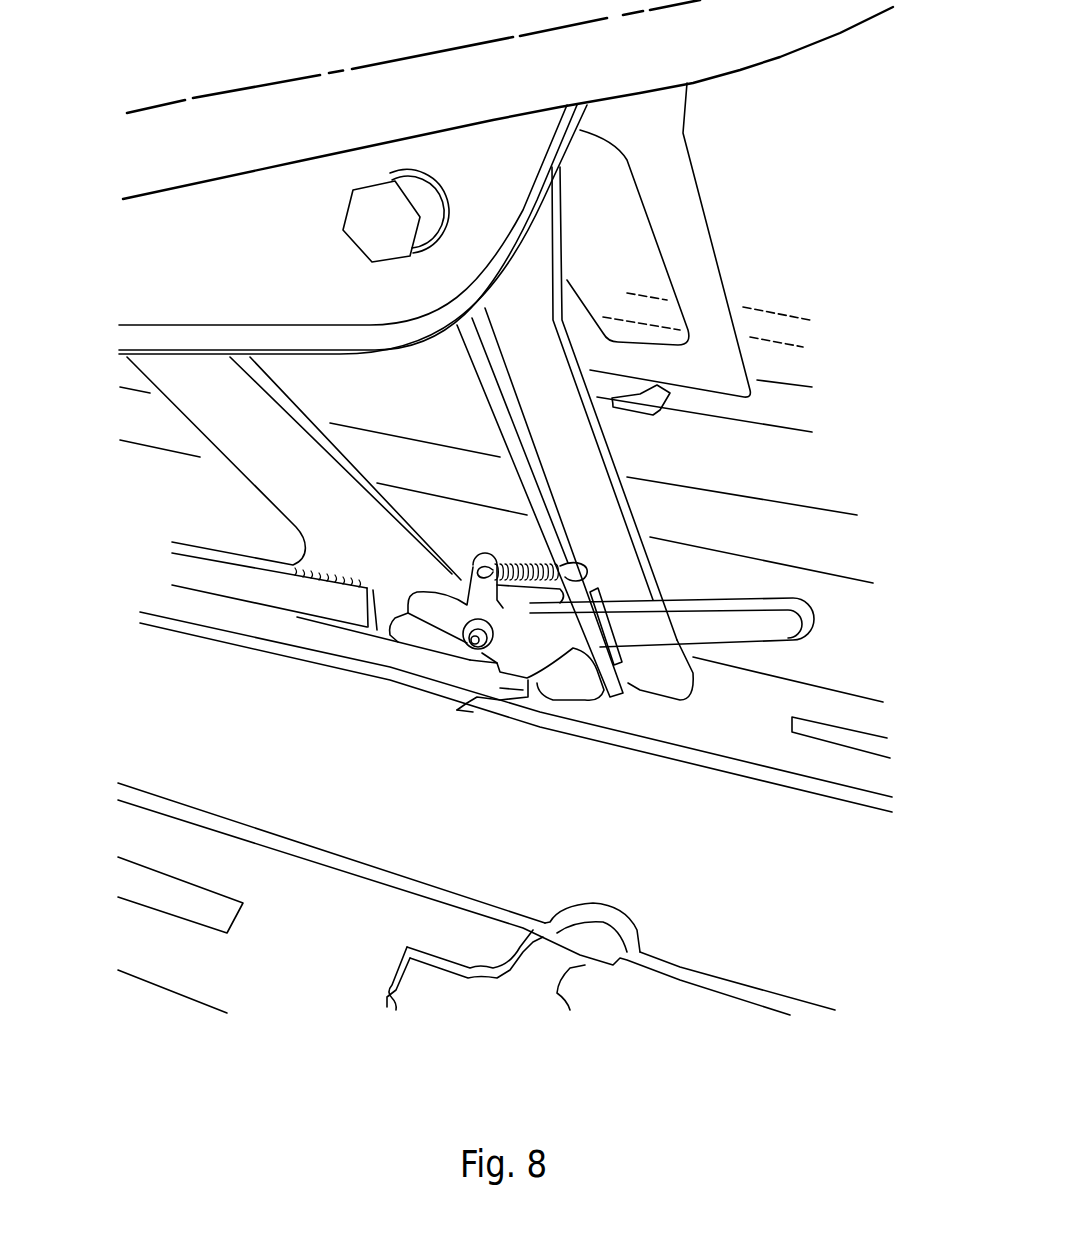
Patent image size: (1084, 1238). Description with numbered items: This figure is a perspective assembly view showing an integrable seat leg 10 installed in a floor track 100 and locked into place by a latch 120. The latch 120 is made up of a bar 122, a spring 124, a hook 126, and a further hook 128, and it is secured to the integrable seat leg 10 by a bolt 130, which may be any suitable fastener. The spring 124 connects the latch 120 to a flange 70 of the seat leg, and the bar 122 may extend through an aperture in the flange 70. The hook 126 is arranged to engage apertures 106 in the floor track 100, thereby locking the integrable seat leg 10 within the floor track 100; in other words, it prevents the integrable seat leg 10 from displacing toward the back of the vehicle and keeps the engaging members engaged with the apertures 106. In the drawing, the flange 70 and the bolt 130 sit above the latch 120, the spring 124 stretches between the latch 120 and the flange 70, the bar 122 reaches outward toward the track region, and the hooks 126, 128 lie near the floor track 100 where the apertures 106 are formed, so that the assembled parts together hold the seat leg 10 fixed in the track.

The integrable seat leg 10 is at (638, 460).
The flange 70 is at (510, 397).
The floor track 100 is at (193, 708).
The apertures 106 is at (825, 727).
The latch 120 is at (758, 653).
The bar 122 is at (713, 600).
The spring 124 is at (512, 513).
The hook 126 is at (465, 650).
The hook 128 is at (410, 613).
The bolt 130 is at (473, 643).